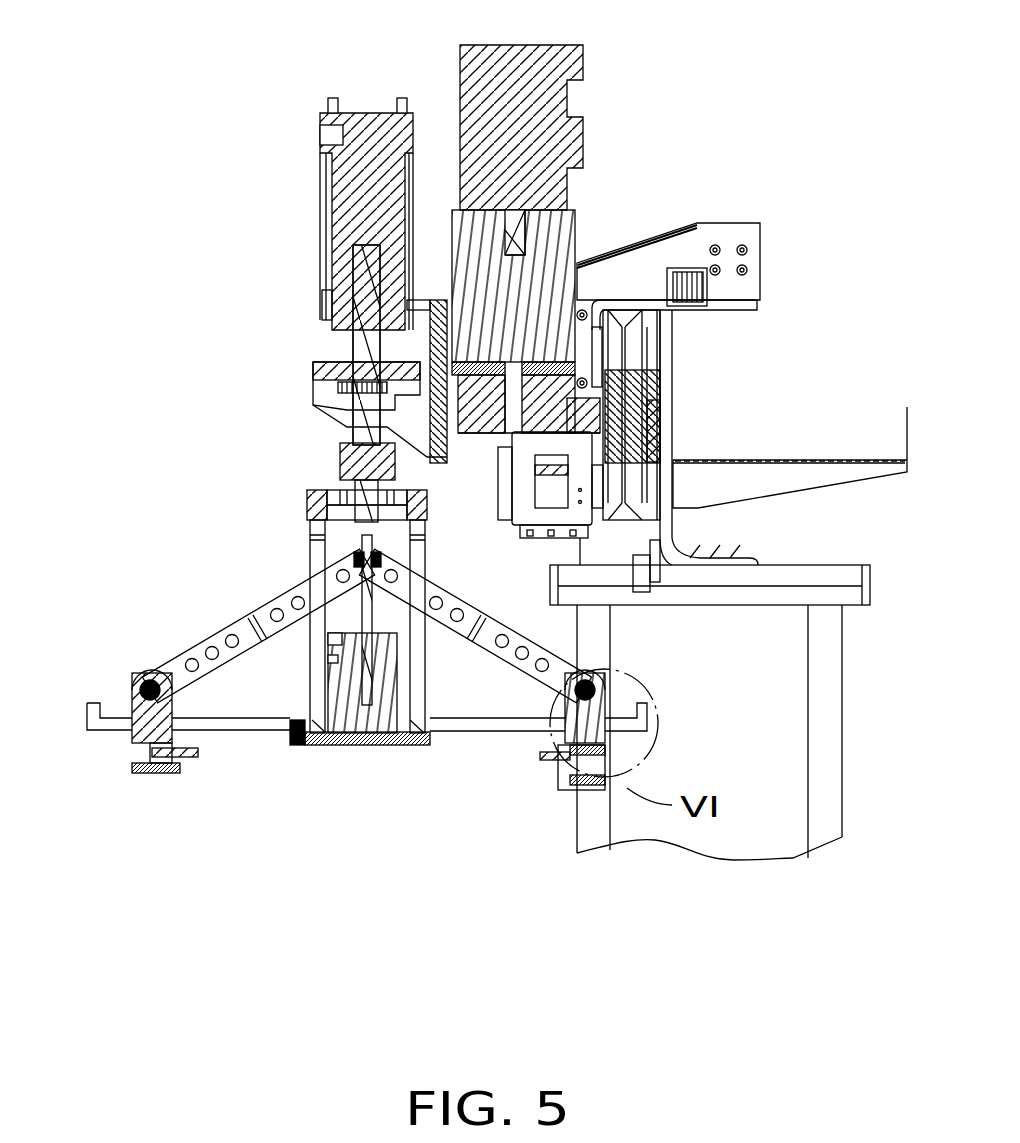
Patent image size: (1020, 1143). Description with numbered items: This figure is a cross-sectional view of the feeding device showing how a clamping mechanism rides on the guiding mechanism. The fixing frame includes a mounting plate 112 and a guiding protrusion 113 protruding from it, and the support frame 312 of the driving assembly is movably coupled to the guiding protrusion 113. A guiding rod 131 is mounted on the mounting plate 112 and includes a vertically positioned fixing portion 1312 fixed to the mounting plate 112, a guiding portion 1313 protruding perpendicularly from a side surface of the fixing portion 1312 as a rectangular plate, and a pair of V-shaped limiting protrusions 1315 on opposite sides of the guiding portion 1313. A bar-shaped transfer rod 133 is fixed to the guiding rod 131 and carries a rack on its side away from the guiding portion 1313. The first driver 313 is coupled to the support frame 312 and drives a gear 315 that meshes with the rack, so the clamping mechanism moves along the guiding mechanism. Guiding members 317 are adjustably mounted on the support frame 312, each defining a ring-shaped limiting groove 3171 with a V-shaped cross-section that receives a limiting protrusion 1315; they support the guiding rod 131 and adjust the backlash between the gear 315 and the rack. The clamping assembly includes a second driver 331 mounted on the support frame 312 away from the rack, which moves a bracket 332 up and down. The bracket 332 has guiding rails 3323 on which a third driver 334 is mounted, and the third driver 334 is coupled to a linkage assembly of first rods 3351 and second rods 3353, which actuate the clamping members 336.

The first driver 313 is at (493, 62).
The second driver 331 is at (355, 197).
The limiting groove 3171 is at (622, 320).
The support frame 312 is at (738, 232).
The guiding protrusion 113 is at (703, 280).
The limiting protrusion 1315 is at (625, 378).
The guiding portion 1313 is at (625, 425).
The fixing portion 1312 is at (650, 462).
The guiding rod 131 is at (725, 415).
The transfer rod 133 is at (560, 412).
The gear 315 is at (467, 400).
The bracket 332 is at (318, 560).
The first rod 3351 is at (283, 600).
The second rod 3353 is at (467, 628).
The clamping member 336 is at (134, 680).
The guiding rail 3323 is at (228, 722).
The third driver 334 is at (362, 710).
The guiding member 317 is at (633, 500).
The mounting plate 112 is at (673, 555).